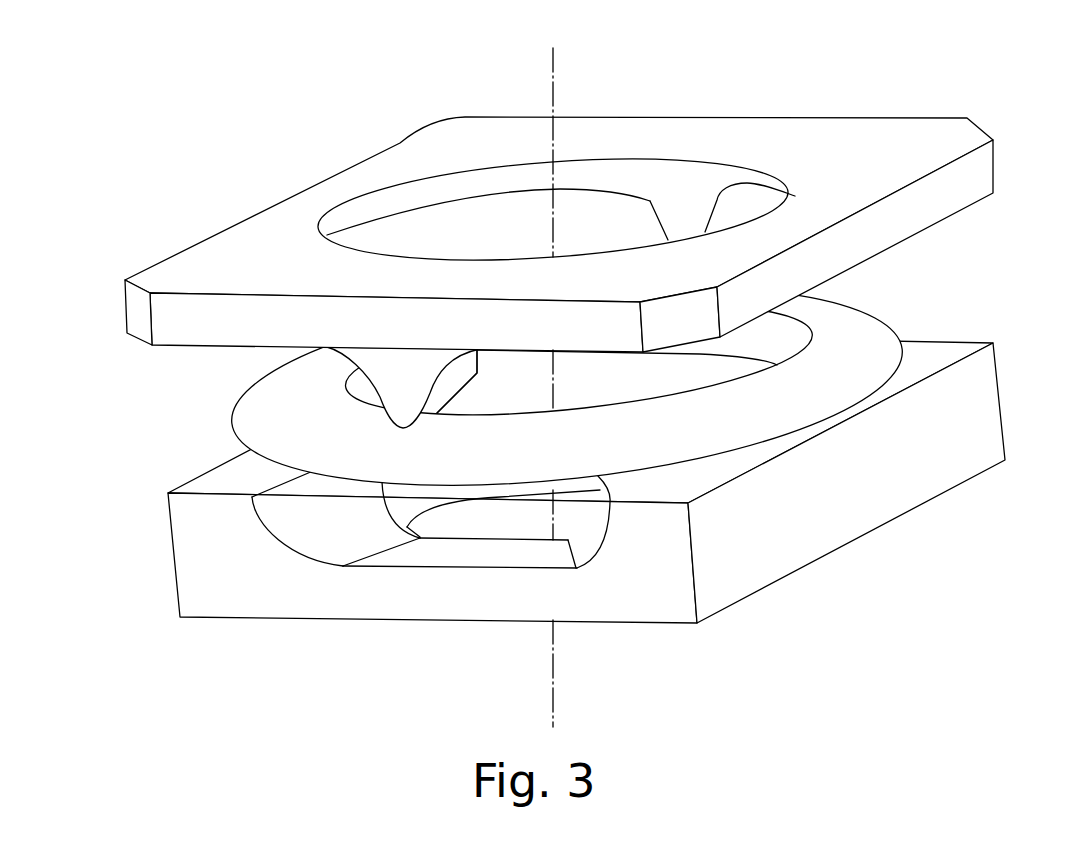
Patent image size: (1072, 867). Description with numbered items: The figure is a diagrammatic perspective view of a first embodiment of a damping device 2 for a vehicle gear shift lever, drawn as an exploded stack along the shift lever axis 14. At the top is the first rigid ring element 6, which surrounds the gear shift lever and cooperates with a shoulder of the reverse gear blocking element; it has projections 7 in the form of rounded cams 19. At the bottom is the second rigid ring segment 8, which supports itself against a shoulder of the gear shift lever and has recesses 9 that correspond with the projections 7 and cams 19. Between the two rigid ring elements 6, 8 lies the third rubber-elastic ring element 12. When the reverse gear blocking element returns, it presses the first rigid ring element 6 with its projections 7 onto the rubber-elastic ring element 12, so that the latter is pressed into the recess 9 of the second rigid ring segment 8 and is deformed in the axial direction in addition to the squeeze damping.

The damping device 2 is at (975, 107).
The first rigid ring element 6 is at (850, 130).
The projection 7 is at (378, 352).
The second rigid ring segment 8 is at (586, 503).
The recess 9 is at (323, 552).
The third rubber-elastic ring element 12 is at (865, 350).
The shift lever axis 14 is at (550, 55).
The rounded cam 19 is at (675, 220).